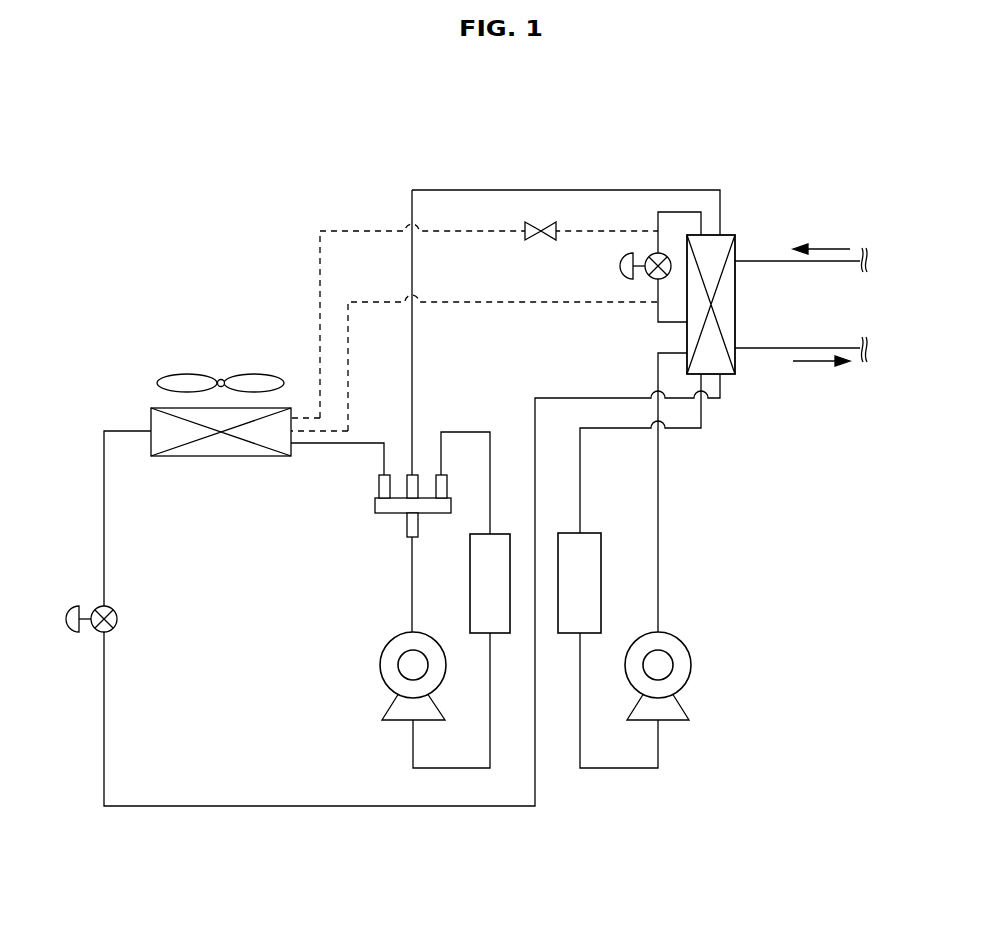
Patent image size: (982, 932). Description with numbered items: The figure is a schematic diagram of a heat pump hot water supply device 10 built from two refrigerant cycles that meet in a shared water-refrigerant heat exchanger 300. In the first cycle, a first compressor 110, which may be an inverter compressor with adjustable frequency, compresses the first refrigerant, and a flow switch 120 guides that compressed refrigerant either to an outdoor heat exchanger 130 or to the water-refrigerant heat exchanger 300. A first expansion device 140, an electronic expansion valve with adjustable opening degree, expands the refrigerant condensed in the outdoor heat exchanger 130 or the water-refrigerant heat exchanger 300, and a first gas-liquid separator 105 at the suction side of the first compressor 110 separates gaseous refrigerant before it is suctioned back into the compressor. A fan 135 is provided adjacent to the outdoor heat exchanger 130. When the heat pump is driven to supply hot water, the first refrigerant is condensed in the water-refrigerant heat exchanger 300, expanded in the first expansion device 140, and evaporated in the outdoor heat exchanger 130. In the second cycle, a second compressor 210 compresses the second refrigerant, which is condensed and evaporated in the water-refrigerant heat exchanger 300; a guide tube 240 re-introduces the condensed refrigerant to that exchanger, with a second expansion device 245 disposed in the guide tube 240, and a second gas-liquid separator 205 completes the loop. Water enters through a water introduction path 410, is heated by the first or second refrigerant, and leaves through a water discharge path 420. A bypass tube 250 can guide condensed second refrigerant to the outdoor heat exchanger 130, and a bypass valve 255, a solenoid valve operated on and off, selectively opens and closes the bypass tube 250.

The hot water supply device 10 is at (667, 150).
The first gas-liquid separator 105 is at (470, 583).
The first compressor 110 is at (380, 662).
The flow switch 120 is at (375, 504).
The outdoor heat exchanger 130 is at (151, 416).
The fan 135 is at (188, 372).
The first expansion device 140 is at (100, 607).
The second gas-liquid separator 205 is at (601, 583).
The second compressor 210 is at (691, 665).
The guide tube 240 is at (680, 212).
The second expansion device 245 is at (622, 262).
The bypass tube 250 is at (475, 231).
The bypass valve 255 is at (537, 241).
The water-refrigerant heat exchanger 300 is at (740, 222).
The water introduction path 410 is at (768, 258).
The water discharge path 420 is at (768, 352).